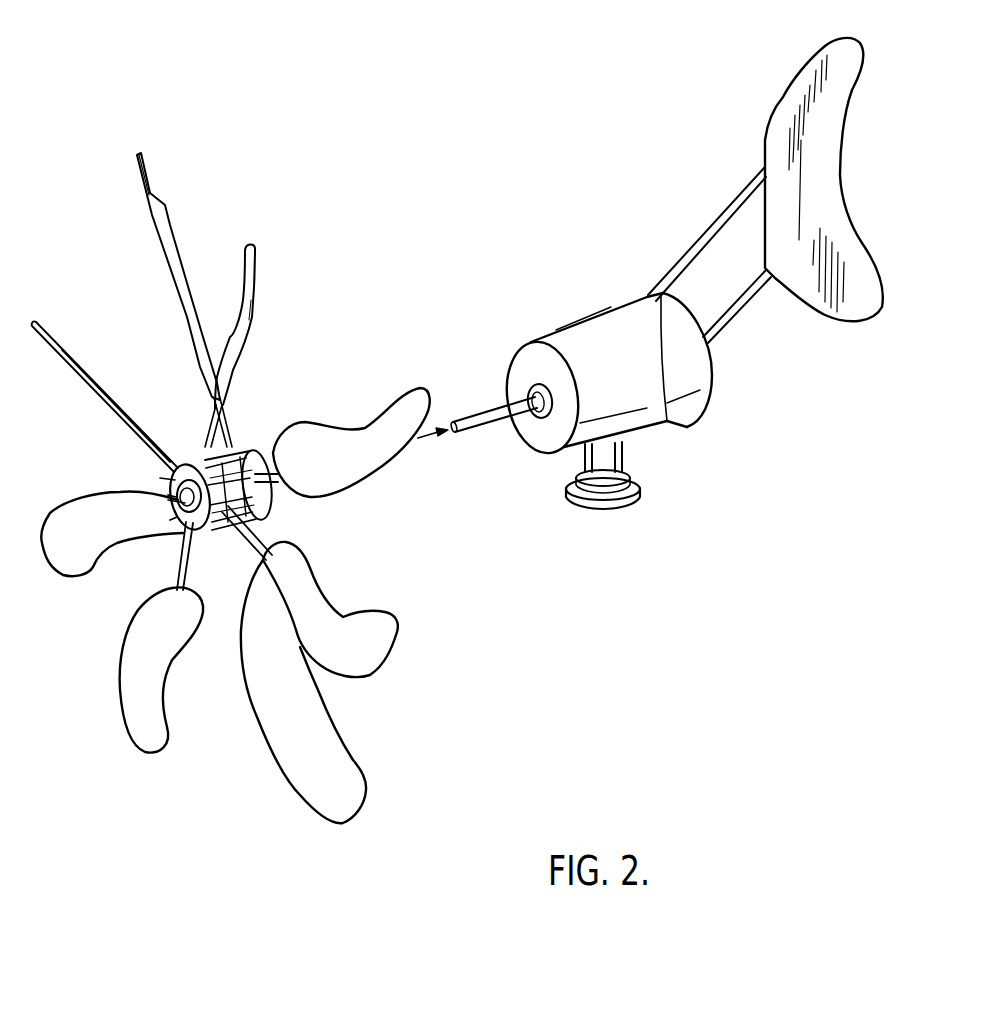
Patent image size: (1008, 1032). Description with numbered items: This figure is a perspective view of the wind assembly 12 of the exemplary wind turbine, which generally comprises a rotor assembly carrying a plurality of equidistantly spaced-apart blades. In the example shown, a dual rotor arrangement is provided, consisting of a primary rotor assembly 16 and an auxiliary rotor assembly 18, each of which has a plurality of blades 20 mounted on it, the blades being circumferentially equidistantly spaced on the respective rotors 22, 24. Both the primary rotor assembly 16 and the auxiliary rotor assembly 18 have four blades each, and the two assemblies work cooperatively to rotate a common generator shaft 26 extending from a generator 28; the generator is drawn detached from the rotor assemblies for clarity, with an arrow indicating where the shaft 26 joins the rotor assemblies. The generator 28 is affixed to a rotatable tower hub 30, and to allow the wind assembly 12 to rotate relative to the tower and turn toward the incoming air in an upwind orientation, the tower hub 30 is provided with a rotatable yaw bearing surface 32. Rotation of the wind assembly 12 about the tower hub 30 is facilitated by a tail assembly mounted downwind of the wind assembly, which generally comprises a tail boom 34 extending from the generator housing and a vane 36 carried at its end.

The wind assembly 12 is at (249, 110).
The primary rotor assembly 16 is at (248, 442).
The auxiliary rotor assembly 18 is at (195, 454).
The blades 20 is at (74, 566).
The rotor 22 is at (270, 493).
The rotor 24 is at (192, 532).
The generator shaft 26 is at (482, 408).
The generator 28 is at (636, 386).
The tower hub 30 is at (638, 477).
The yaw bearing surface 32 is at (566, 484).
The tail boom 34 is at (722, 218).
The vane 36 is at (823, 173).